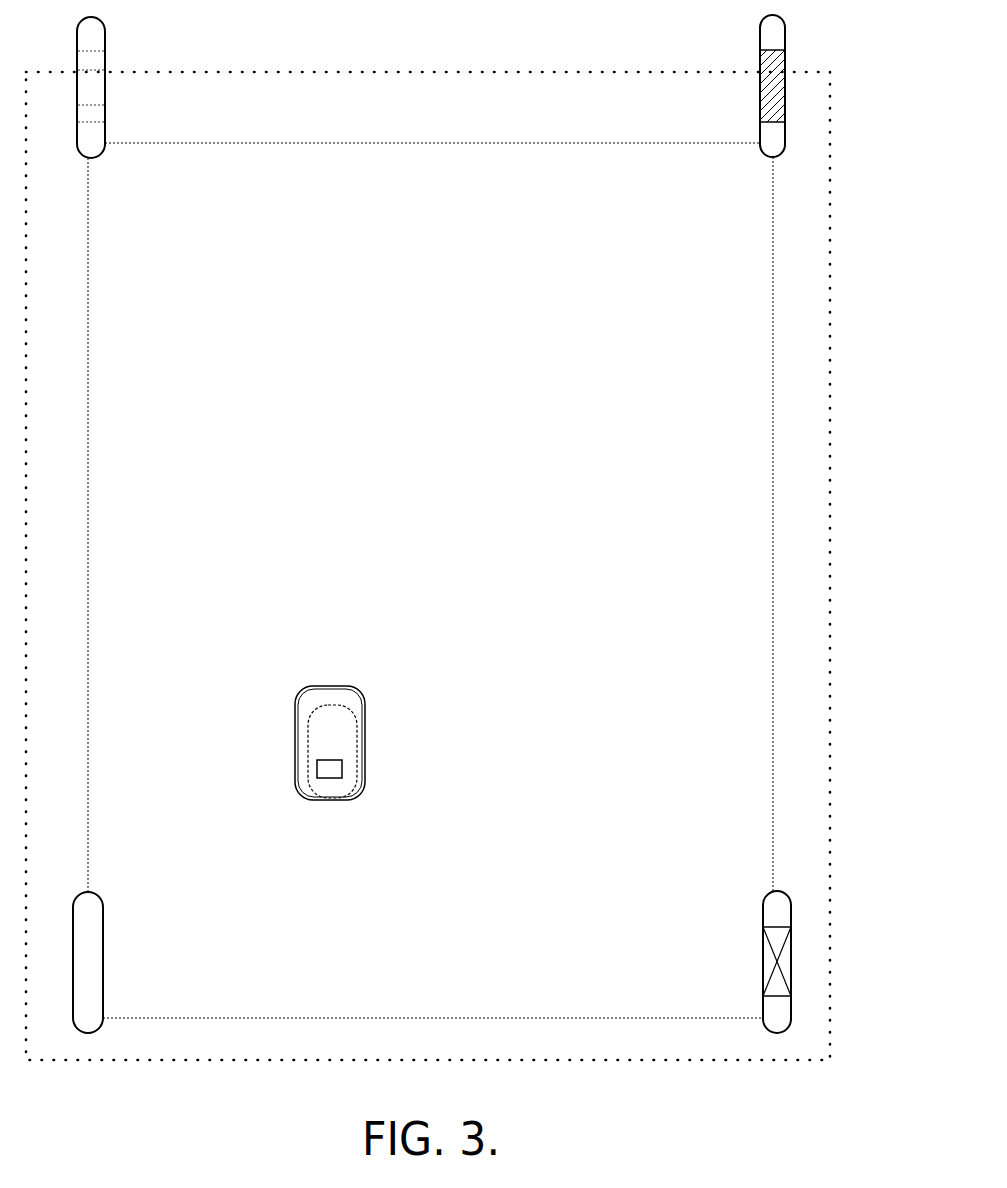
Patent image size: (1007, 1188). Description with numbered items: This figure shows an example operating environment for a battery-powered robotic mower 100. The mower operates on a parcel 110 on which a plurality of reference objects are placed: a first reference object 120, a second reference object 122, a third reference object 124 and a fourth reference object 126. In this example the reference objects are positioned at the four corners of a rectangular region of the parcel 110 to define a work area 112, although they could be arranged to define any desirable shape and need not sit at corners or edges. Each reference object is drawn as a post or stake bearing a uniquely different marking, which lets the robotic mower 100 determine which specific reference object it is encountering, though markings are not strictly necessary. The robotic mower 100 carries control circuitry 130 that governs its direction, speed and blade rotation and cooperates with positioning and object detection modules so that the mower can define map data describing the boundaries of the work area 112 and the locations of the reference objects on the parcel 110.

The robotic mower 100 is at (345, 727).
The parcel 110 is at (808, 312).
The work area 112 is at (750, 598).
The first reference object 120 is at (133, 87).
The second reference object 122 is at (813, 86).
The third reference object 124 is at (819, 962).
The fourth reference object 126 is at (129, 962).
The control circuitry 130 is at (388, 793).